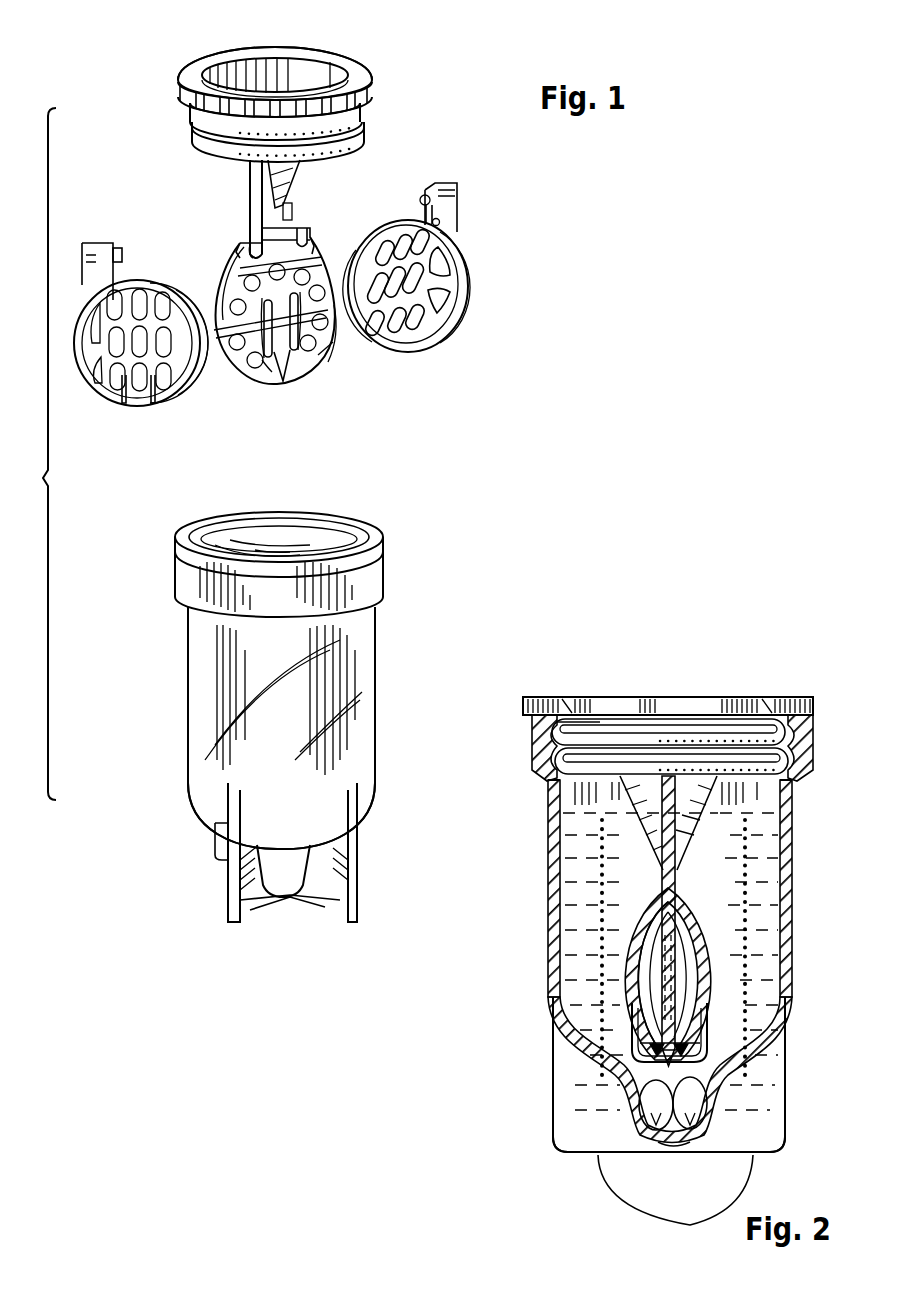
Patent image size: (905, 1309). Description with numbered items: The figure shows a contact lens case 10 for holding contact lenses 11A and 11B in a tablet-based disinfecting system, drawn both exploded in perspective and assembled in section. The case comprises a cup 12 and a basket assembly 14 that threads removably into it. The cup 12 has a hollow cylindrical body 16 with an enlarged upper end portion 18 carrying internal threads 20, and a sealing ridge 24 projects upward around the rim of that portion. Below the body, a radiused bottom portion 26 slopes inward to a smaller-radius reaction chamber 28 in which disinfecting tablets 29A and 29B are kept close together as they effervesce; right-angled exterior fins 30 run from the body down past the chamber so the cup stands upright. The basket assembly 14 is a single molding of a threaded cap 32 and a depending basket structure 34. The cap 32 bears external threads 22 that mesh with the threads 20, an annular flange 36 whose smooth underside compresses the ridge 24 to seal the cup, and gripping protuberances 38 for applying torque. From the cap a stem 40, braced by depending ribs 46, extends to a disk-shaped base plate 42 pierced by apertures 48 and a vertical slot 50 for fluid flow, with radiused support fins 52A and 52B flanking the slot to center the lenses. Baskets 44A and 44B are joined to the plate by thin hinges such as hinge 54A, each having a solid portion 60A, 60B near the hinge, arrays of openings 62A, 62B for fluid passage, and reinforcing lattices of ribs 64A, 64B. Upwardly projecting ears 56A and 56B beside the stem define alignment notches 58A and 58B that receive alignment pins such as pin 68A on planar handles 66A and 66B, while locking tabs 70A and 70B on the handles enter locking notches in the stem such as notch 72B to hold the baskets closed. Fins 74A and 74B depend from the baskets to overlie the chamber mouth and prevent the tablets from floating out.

In FIG. 1, the contact lens case 10 is at (31, 454).
In FIG. 2, the contact lens case 10 is at (484, 1112).
In FIG. 2, the contact lens 11A is at (790, 950).
In FIG. 2, the contact lens 11B is at (617, 972).
In FIG. 1, the cup 12 is at (380, 687).
In FIG. 2, the cup 12 is at (540, 812).
In FIG. 1, the basket assembly 14 is at (455, 103).
In FIG. 1, the cylindrical body 16 is at (188, 672).
In FIG. 2, the cylindrical body 16 is at (792, 798).
In FIG. 1, the upper end portion 18 is at (386, 570).
In FIG. 2, the upper end portion 18 is at (530, 738).
In FIG. 1, the internal threads 20 is at (200, 537).
In FIG. 2, the internal threads 20 is at (550, 782).
In FIG. 1, the external threads 22 is at (193, 133).
In FIG. 2, the external threads 22 is at (637, 730).
In FIG. 1, the sealing ridge 24 is at (383, 533).
In FIG. 2, the sealing ridge 24 is at (528, 717).
In FIG. 1, the bottom portion 26 is at (202, 807).
In FIG. 2, the bottom portion 26 is at (588, 1068).
In FIG. 1, the reaction chamber 28 is at (287, 884).
In FIG. 2, the reaction chamber 28 is at (678, 1145).
In FIG. 2, the disinfecting tablet 29A is at (660, 1120).
In FIG. 2, the disinfecting tablet 29B is at (691, 1120).
In FIG. 1, the exterior fins 30 is at (222, 858).
In FIG. 2, the exterior fins 30 is at (675, 1202).
In FIG. 1, the threaded cap 32 is at (372, 107).
In FIG. 2, the threaded cap 32 is at (608, 720).
In FIG. 1, the basket structure 34 is at (247, 207).
In FIG. 1, the flange 36 is at (352, 67).
In FIG. 2, the flange 36 is at (560, 700).
In FIG. 1, the protuberances 38 is at (187, 105).
In FIG. 2, the protuberances 38 is at (767, 700).
In FIG. 1, the stem 40 is at (250, 165).
In FIG. 2, the stem 40 is at (663, 850).
In FIG. 1, the base plate 42 is at (330, 325).
In FIG. 2, the base plate 42 is at (640, 1070).
In FIG. 1, the basket 44A is at (452, 337).
In FIG. 2, the basket 44A is at (716, 938).
In FIG. 1, the basket 44B is at (118, 412).
In FIG. 2, the basket 44B is at (622, 958).
In FIG. 1, the ribs 46 is at (283, 175).
In FIG. 2, the ribs 46 is at (795, 783).
In FIG. 1, the apertures 48 is at (322, 290).
In FIG. 1, the vertical slot 50 is at (268, 366).
In FIG. 1, the support fin 52A is at (294, 354).
In FIG. 2, the support fin 52A is at (700, 967).
In FIG. 2, the support fin 52B is at (640, 957).
In FIG. 1, the hinge 54A is at (336, 345).
In FIG. 1, the ear 56A is at (238, 247).
In FIG. 1, the ear 56B is at (318, 248).
In FIG. 1, the alignment notch 58A is at (252, 250).
In FIG. 1, the alignment notch 58B is at (302, 235).
In FIG. 1, the solid portion 60A is at (372, 348).
In FIG. 1, the solid portion 60B is at (196, 352).
In FIG. 1, the openings 62A is at (435, 293).
In FIG. 1, the openings 62B is at (161, 400).
In FIG. 1, the lattice of ribs 64A is at (430, 290).
In FIG. 1, the lattice of ribs 64B is at (116, 284).
In FIG. 1, the handle 66A is at (457, 195).
In FIG. 1, the handle 66B is at (101, 243).
In FIG. 1, the alignment pin 68A is at (440, 223).
In FIG. 1, the locking tab 70A is at (421, 198).
In FIG. 1, the locking tab 70B is at (125, 252).
In FIG. 1, the locking notch 72B is at (283, 212).
In FIG. 2, the fin 74A is at (687, 1052).
In FIG. 1, the fin 74B is at (152, 403).
In FIG. 2, the fin 74B is at (650, 1052).